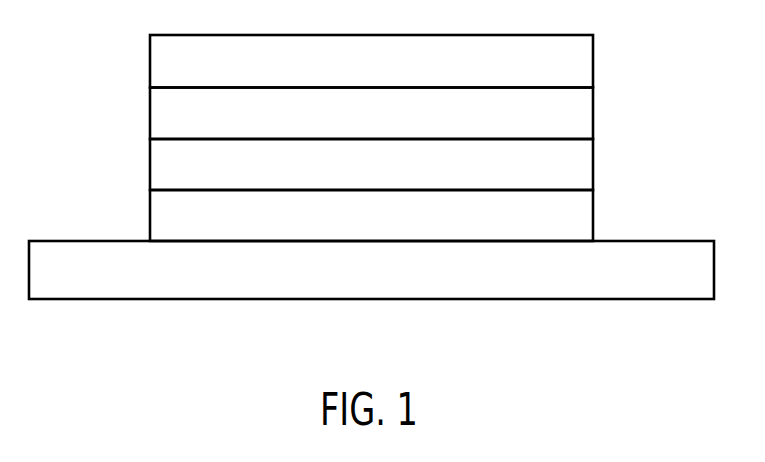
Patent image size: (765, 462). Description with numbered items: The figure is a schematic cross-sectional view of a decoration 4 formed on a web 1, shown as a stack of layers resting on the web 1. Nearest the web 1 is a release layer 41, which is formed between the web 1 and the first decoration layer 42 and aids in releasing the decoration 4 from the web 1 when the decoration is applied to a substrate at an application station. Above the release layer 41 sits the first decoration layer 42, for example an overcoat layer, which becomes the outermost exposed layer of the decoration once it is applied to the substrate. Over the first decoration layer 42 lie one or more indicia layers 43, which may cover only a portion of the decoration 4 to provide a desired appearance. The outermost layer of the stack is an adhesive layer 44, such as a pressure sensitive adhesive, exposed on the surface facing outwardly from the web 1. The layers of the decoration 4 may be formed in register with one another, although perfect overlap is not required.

The web 1 is at (364, 283).
The decoration 4 is at (400, 138).
The release layer 41 is at (362, 229).
The first decoration layer 42 is at (362, 178).
The indicia layer 43 is at (362, 125).
The adhesive layer 44 is at (362, 73).